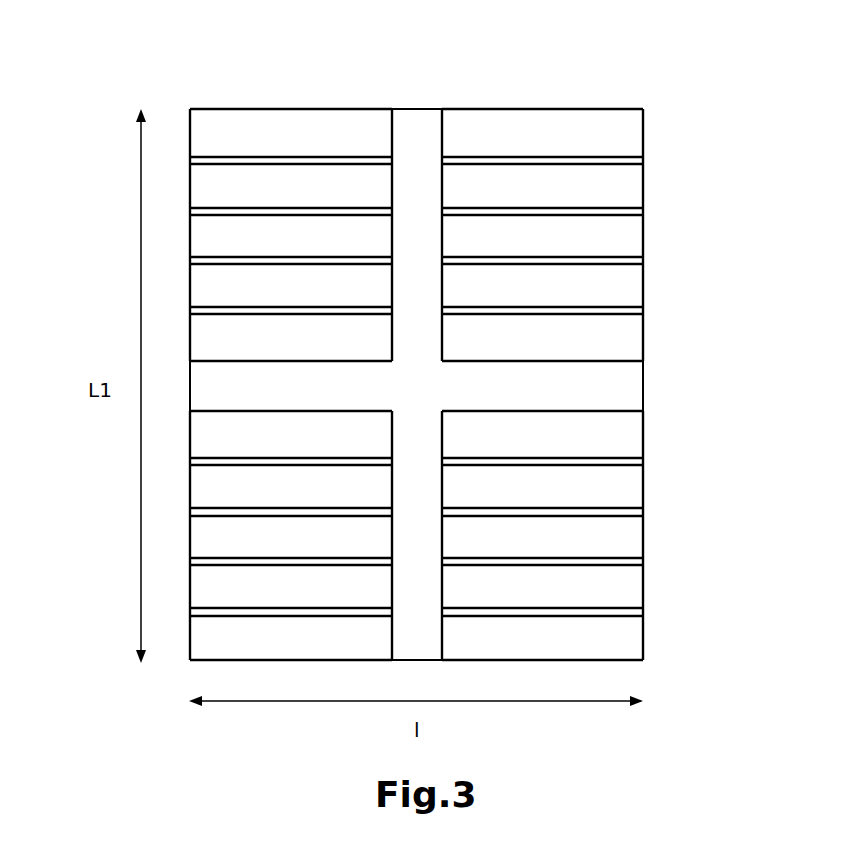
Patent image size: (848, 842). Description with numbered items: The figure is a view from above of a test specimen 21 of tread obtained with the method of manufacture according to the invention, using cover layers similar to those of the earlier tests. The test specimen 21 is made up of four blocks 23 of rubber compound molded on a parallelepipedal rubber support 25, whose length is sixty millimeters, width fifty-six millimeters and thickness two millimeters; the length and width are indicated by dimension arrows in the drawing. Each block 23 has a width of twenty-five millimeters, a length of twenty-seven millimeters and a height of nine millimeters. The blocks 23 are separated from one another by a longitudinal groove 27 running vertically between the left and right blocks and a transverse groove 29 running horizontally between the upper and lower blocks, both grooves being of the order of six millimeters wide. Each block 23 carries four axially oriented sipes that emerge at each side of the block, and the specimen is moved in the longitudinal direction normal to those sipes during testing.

The test specimen 21 is at (148, 92).
The block 23 is at (693, 109).
The rubber support 25 is at (648, 389).
The longitudinal groove 27 is at (429, 247).
The transverse groove 29 is at (556, 398).